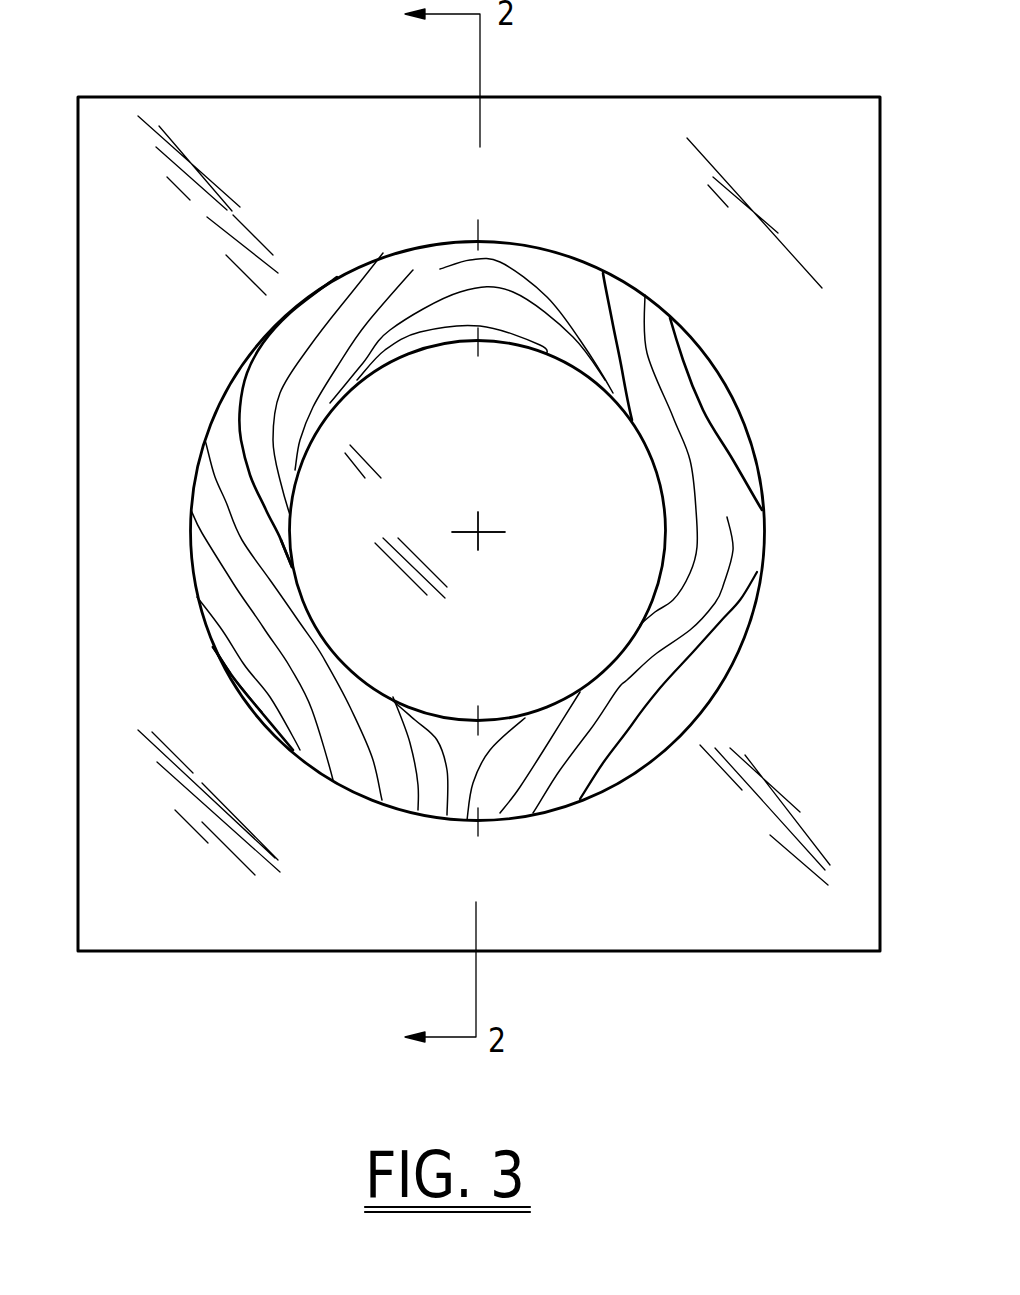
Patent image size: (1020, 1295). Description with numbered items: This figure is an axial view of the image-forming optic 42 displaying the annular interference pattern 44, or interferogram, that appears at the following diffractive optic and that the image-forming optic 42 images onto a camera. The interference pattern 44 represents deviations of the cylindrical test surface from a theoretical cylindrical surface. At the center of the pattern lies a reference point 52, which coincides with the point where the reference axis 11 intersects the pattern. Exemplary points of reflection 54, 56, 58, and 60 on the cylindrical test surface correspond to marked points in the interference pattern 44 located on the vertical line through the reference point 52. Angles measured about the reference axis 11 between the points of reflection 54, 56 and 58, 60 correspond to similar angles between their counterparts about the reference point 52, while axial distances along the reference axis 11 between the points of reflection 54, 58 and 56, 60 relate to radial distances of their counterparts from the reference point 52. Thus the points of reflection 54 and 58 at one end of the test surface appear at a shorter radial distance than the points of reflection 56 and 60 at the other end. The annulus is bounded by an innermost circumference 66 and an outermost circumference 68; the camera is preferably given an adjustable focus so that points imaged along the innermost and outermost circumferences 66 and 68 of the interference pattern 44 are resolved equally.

The image-forming optic 42 is at (644, 205).
The interference pattern 44 is at (274, 401).
The reference point 52 is at (480, 536).
The reference axis 11 is at (478, 531).
The point of reflection 54 is at (482, 344).
The point of reflection 56 is at (478, 238).
The point of reflection 58 is at (477, 718).
The point of reflection 60 is at (550, 831).
The innermost circumference 66 is at (293, 567).
The outermost circumference 68 is at (215, 648).